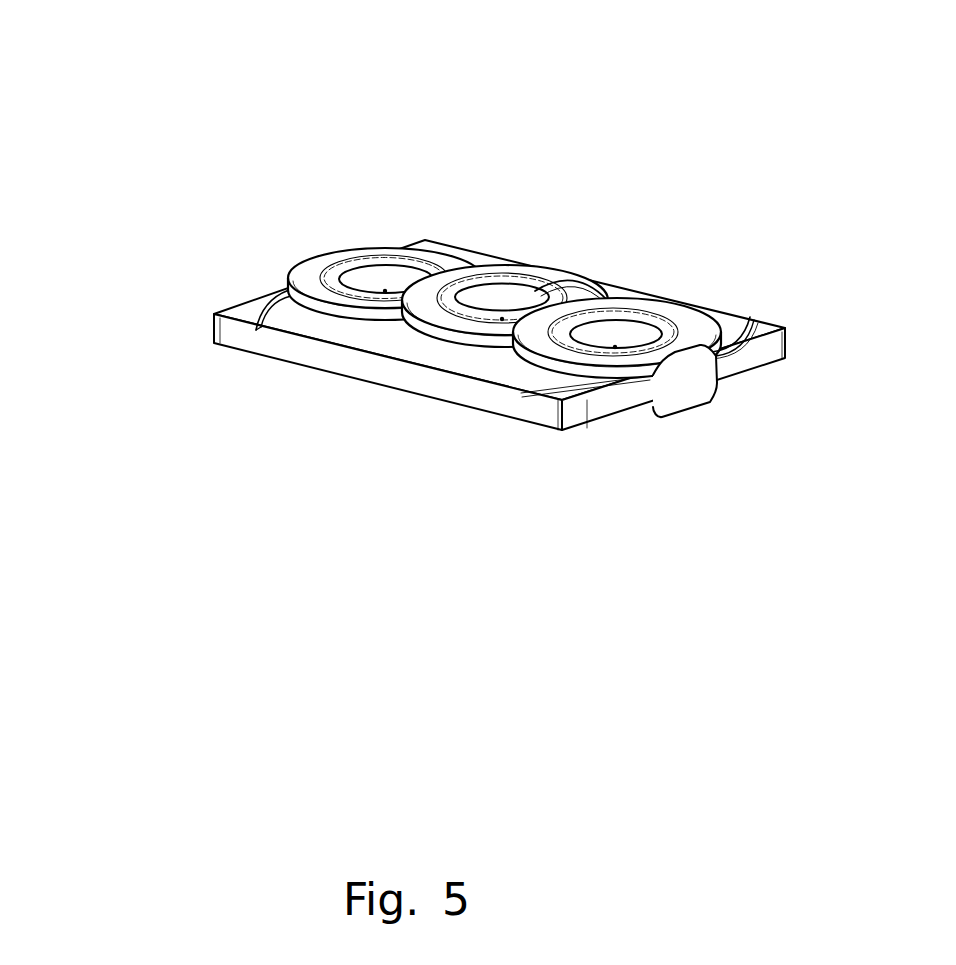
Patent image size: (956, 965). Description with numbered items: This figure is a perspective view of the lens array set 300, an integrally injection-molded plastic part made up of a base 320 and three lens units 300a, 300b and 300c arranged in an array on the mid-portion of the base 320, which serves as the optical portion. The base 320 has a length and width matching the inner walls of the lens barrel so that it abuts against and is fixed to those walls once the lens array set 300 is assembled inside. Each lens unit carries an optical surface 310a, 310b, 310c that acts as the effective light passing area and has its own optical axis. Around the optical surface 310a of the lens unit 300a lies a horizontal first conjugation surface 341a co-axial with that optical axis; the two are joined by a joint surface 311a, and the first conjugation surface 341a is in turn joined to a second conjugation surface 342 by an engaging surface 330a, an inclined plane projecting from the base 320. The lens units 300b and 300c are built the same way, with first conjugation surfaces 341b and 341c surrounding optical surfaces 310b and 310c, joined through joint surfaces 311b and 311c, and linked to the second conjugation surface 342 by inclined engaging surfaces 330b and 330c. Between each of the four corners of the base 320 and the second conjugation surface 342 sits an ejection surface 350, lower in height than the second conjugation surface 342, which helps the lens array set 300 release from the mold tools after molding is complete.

The lens array set 300 is at (194, 42).
The lens unit 300a is at (488, 304).
The lens unit 300b is at (377, 267).
The lens unit 300c is at (267, 225).
The optical surface 310a is at (618, 333).
The optical surface 310b is at (505, 306).
The optical surface 310c is at (401, 243).
The joint surface 311a is at (637, 323).
The joint surface 311b is at (523, 295).
The joint surface 311c is at (360, 273).
The base 320 is at (600, 408).
The engaging surface 330a is at (542, 362).
The engaging surface 330b is at (420, 330).
The engaging surface 330c is at (313, 303).
The first conjugation surface 341a is at (680, 312).
The first conjugation surface 341b is at (542, 283).
The first conjugation surface 341c is at (338, 258).
The second conjugation surface 342 is at (732, 320).
The ejection surface 350 is at (768, 330).